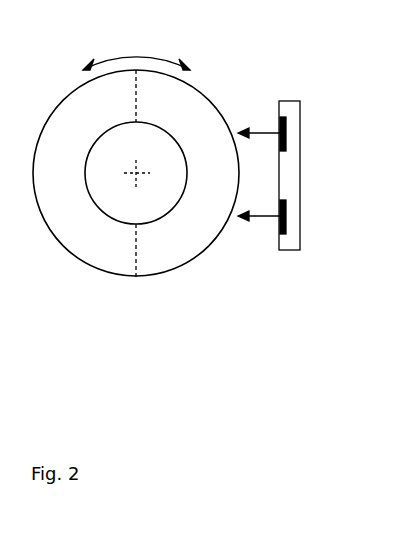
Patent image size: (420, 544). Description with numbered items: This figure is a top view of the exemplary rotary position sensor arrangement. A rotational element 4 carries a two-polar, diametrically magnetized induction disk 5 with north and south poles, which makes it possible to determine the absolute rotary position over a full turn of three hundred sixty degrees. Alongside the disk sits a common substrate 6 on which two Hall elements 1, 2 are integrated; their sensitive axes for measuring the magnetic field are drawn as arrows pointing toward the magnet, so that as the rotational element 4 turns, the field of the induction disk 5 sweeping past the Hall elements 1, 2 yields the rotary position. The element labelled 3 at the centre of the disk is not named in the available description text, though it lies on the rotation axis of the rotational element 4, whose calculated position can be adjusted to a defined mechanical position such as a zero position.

The Hall element 1 is at (279, 237).
The Hall element 2 is at (280, 118).
The rotation axis / shaft 3 is at (137, 175).
The rotational element 4 is at (113, 127).
The induction disk 5 is at (158, 262).
The common substrate 6 is at (290, 101).